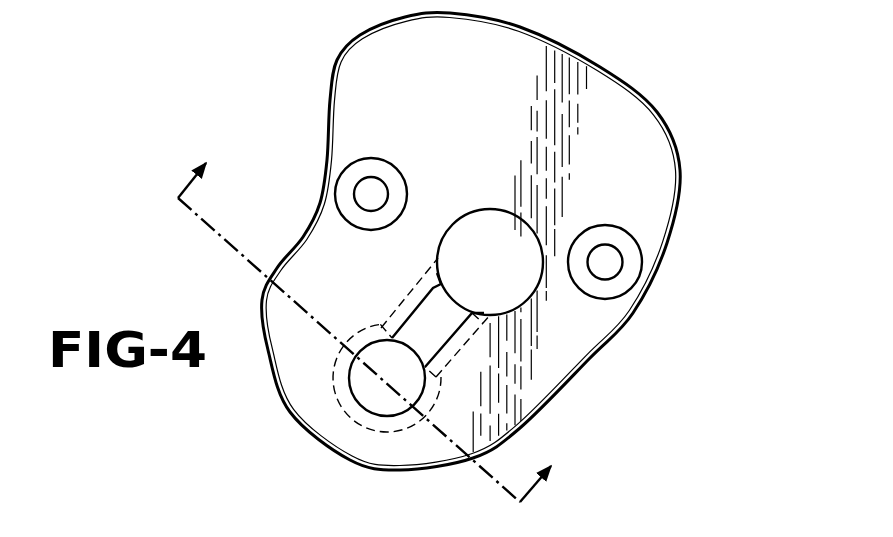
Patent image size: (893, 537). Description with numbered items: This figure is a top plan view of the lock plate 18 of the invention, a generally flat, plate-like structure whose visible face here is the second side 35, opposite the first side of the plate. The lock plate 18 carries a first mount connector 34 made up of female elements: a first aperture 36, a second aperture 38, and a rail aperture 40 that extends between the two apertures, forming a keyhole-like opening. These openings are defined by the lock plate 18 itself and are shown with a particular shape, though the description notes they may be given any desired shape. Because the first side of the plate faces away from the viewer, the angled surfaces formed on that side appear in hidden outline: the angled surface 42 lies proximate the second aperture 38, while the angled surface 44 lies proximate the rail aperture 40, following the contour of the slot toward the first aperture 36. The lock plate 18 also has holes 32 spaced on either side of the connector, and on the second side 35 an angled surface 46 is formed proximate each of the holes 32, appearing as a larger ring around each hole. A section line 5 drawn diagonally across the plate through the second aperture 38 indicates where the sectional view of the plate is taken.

The lock plate 18 is at (486, 241).
The holes 32 is at (369, 193).
The first mount connector 34 is at (546, 303).
The second side 35 is at (633, 180).
The first aperture 36 is at (500, 228).
The second aperture 38 is at (378, 397).
The rail aperture 40 is at (431, 318).
The angled surface 42 is at (366, 436).
The angled surface 44 is at (402, 303).
The angled surface 46 is at (364, 163).
The section line 5- 5 is at (374, 320).